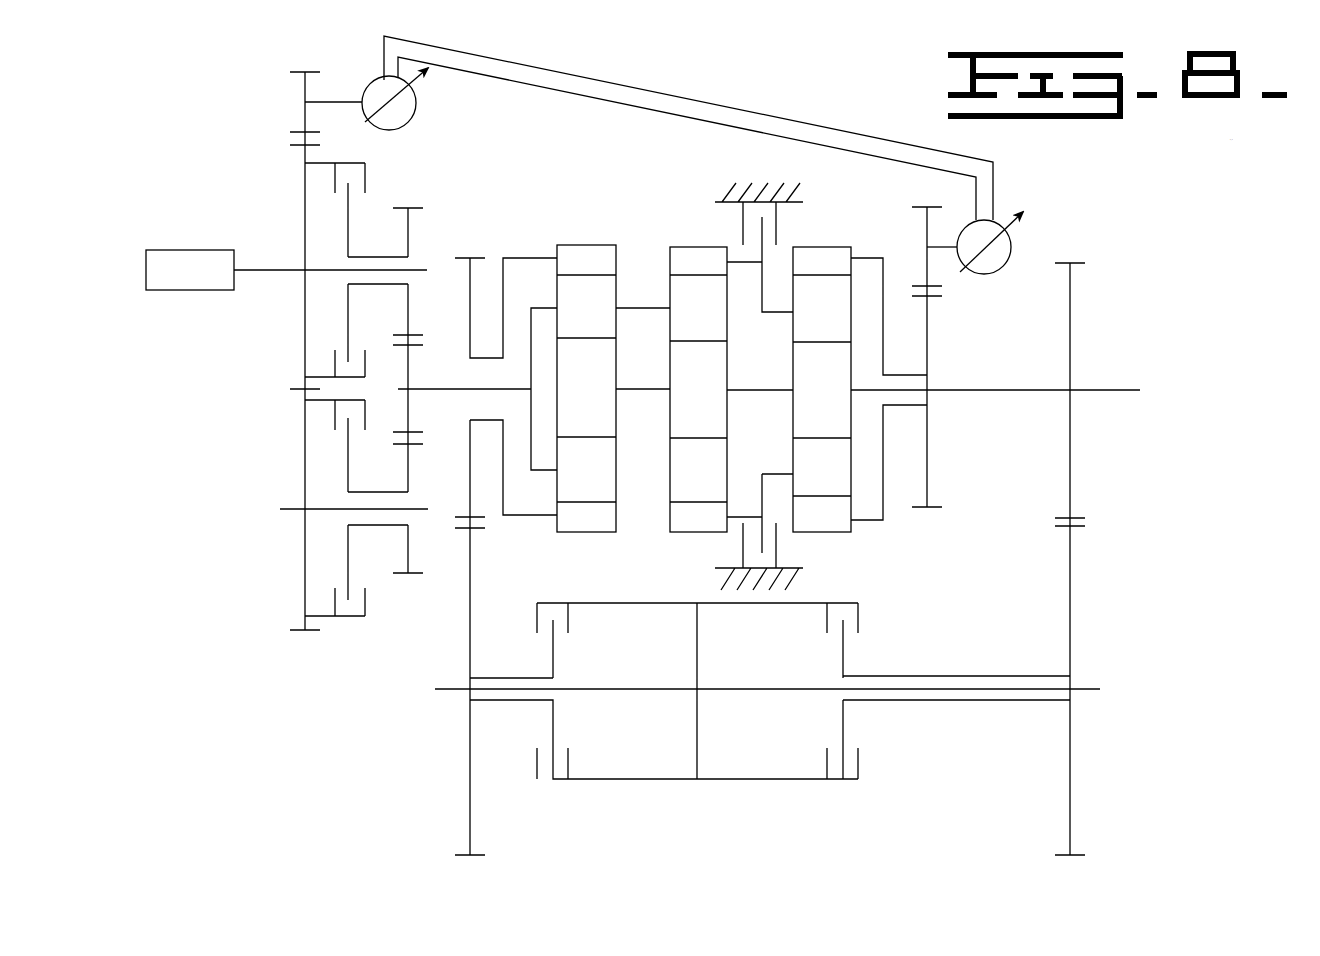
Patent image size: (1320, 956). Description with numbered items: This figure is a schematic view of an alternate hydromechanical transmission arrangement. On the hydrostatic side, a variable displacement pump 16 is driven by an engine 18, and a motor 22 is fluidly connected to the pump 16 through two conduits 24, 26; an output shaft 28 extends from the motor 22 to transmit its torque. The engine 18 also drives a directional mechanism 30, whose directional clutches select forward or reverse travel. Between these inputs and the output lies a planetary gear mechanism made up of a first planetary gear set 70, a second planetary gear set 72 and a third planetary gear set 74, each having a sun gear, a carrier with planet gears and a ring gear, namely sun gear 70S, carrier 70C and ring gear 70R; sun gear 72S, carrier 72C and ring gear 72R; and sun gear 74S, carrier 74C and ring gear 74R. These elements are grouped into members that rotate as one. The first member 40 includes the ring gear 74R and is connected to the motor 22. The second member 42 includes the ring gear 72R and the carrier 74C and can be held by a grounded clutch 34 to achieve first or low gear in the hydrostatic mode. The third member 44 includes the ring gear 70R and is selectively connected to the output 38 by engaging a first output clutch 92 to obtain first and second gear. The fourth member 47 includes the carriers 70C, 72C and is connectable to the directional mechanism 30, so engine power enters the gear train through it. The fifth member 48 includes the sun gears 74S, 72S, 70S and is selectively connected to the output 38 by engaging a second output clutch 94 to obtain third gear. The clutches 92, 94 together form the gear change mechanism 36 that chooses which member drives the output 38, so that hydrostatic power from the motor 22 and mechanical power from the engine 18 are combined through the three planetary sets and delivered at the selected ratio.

The variable displacement pump 16 is at (373, 82).
The engine 18 is at (200, 250).
The motor 22 is at (1012, 244).
The conduit 24 is at (560, 92).
The conduit 26 is at (715, 106).
The output shaft 28 is at (935, 247).
The directional mechanism 30 is at (287, 408).
The grounded clutch 34 is at (777, 229).
The gear change mechanism 36 is at (696, 798).
The output 38 is at (1100, 688).
The first member 40 is at (929, 359).
The second member 42 is at (766, 303).
The third member 44 is at (542, 518).
The fourth member 47 is at (459, 390).
The fifth member 48 is at (1053, 389).
The first planetary gear set 70 is at (586, 205).
The ring gear 70R is at (568, 250).
The carrier 70C is at (563, 306).
The sun gear 70S is at (611, 416).
The second planetary gear set 72 is at (694, 215).
The ring gear 72R is at (683, 250).
The carrier 72C is at (676, 303).
The sun gear 72S is at (706, 367).
The third planetary gear set 74 is at (847, 221).
The ring gear 74R is at (842, 248).
The carrier 74C is at (840, 334).
The sun gear 74S is at (800, 398).
The first output clutch 92 is at (537, 616).
The second output clutch 94 is at (859, 613).